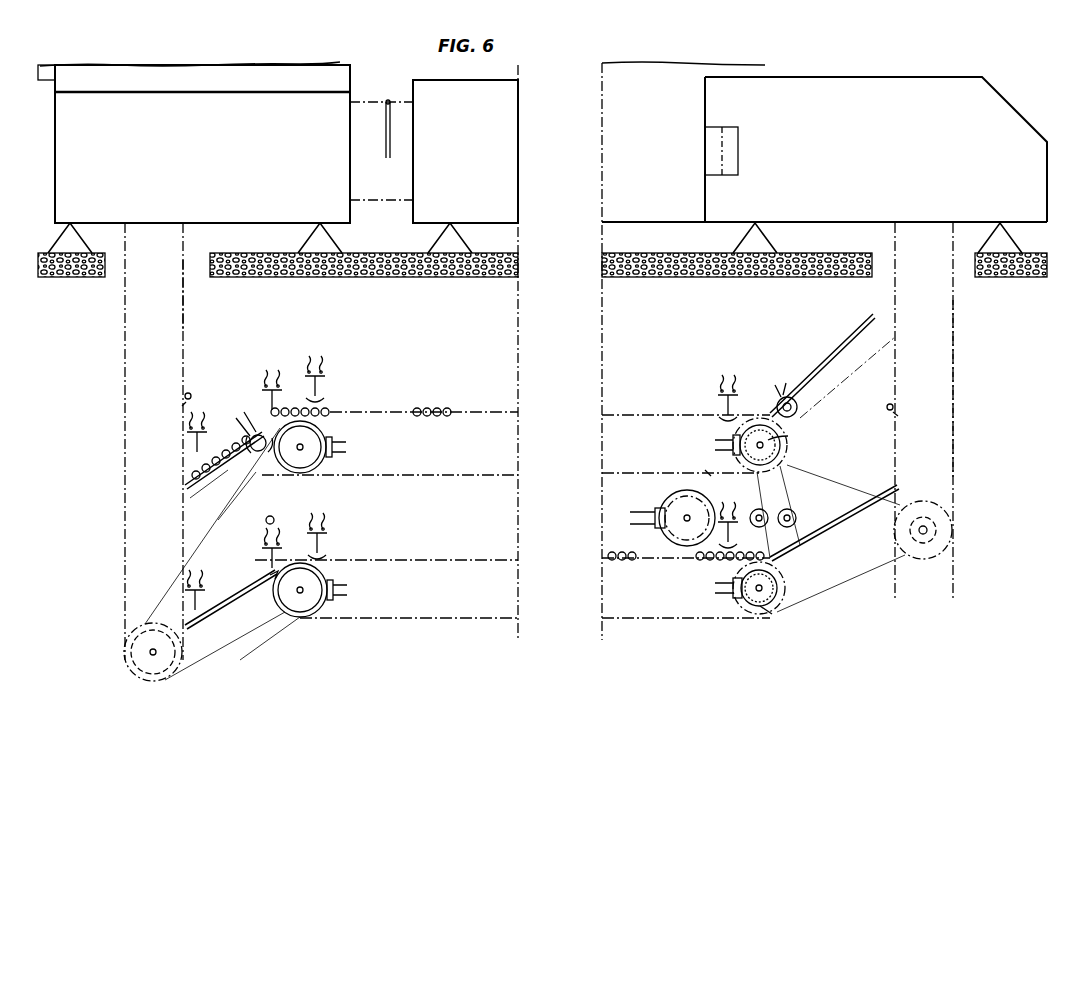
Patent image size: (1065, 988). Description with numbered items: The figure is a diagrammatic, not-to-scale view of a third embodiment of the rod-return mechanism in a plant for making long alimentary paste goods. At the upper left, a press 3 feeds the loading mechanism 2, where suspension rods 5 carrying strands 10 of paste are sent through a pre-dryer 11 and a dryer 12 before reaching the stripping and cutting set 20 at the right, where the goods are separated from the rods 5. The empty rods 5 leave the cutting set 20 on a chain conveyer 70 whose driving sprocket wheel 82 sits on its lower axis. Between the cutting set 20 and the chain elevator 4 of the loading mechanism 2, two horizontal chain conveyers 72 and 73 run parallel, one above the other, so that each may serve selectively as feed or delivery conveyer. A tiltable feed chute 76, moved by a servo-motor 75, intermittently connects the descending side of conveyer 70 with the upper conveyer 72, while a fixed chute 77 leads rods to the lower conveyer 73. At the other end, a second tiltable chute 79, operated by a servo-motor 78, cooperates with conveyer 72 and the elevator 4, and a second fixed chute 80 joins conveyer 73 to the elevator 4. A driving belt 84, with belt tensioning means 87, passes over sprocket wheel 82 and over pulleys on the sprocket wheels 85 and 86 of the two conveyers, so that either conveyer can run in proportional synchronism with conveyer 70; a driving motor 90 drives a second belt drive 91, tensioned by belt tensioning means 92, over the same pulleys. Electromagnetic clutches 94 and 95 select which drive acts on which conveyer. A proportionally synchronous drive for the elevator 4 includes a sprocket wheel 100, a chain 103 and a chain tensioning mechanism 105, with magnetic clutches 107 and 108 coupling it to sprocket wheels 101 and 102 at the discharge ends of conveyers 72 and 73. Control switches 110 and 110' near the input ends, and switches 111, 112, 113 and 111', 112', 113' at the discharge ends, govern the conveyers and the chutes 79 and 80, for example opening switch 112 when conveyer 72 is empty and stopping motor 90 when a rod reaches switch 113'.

The loading mechanism 2 is at (192, 168).
The press 3 is at (222, 70).
The chain elevator 4 is at (183, 330).
The suspension rod 5 is at (387, 100).
The strands of alimentary paste goods 10 is at (388, 160).
The pre-dryer 11 is at (472, 168).
The dryer 12 is at (656, 170).
The stripping and cutting set 20 is at (882, 171).
The chain conveyer 70 is at (950, 420).
The upper chain conveyer 72 is at (634, 416).
The lower chain conveyer 73 is at (429, 560).
The servo-motor 75 is at (786, 394).
The tiltable feed chute 76 is at (814, 364).
The fixed chute 77 is at (834, 524).
The servo-motor 78 is at (266, 456).
The second tiltable chute 79 is at (210, 474).
The second fixed chute 80 is at (232, 596).
The driving sprocket wheel 82 is at (930, 532).
The driving belt 84 is at (878, 574).
The sprocket wheel 85 is at (780, 602).
The sprocket wheel 86 is at (776, 462).
The belt tensioning means 87 is at (796, 516).
The driving motor 90 is at (672, 504).
The second belt drive 91 is at (704, 472).
The belt tensioning means 92 is at (756, 514).
The electromagnetic clutch 94 is at (762, 612).
The electromagnetic clutch 95 is at (788, 436).
The sprocket wheel 100 is at (170, 660).
The sprocket wheel 101 is at (332, 458).
The sprocket wheel 102 is at (330, 604).
The chain 103 is at (278, 622).
The chain tensioning mechanism 105 is at (274, 520).
The magnetic clutch 107 is at (346, 447).
The magnetic clutch 108 is at (347, 591).
The control switch 110 is at (710, 398).
The control switch 110' is at (686, 543).
The switch 111 is at (207, 417).
The switch 111' is at (176, 583).
The switch 112 is at (270, 378).
The switch 112' is at (251, 547).
The switch 113 is at (361, 378).
The switch 113' is at (340, 536).